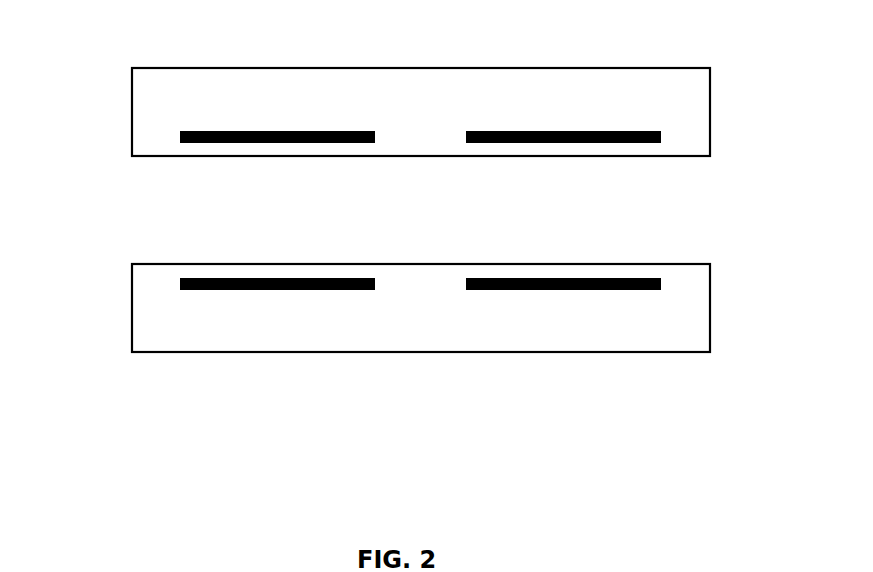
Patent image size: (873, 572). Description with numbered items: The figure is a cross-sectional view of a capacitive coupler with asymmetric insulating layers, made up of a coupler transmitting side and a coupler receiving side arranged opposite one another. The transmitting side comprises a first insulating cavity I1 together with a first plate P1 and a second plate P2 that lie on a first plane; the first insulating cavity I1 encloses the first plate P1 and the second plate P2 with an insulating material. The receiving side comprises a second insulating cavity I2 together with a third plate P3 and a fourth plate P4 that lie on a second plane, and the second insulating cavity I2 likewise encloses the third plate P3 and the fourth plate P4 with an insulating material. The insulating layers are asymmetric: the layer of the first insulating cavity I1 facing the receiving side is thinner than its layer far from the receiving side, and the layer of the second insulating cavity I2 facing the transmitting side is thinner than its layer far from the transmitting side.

The first insulating cavity I1 is at (285, 330).
The second insulating cavity I2 is at (288, 90).
The first plate P1 is at (215, 291).
The second plate P2 is at (630, 290).
The third plate P3 is at (218, 129).
The fourth plate P4 is at (633, 130).